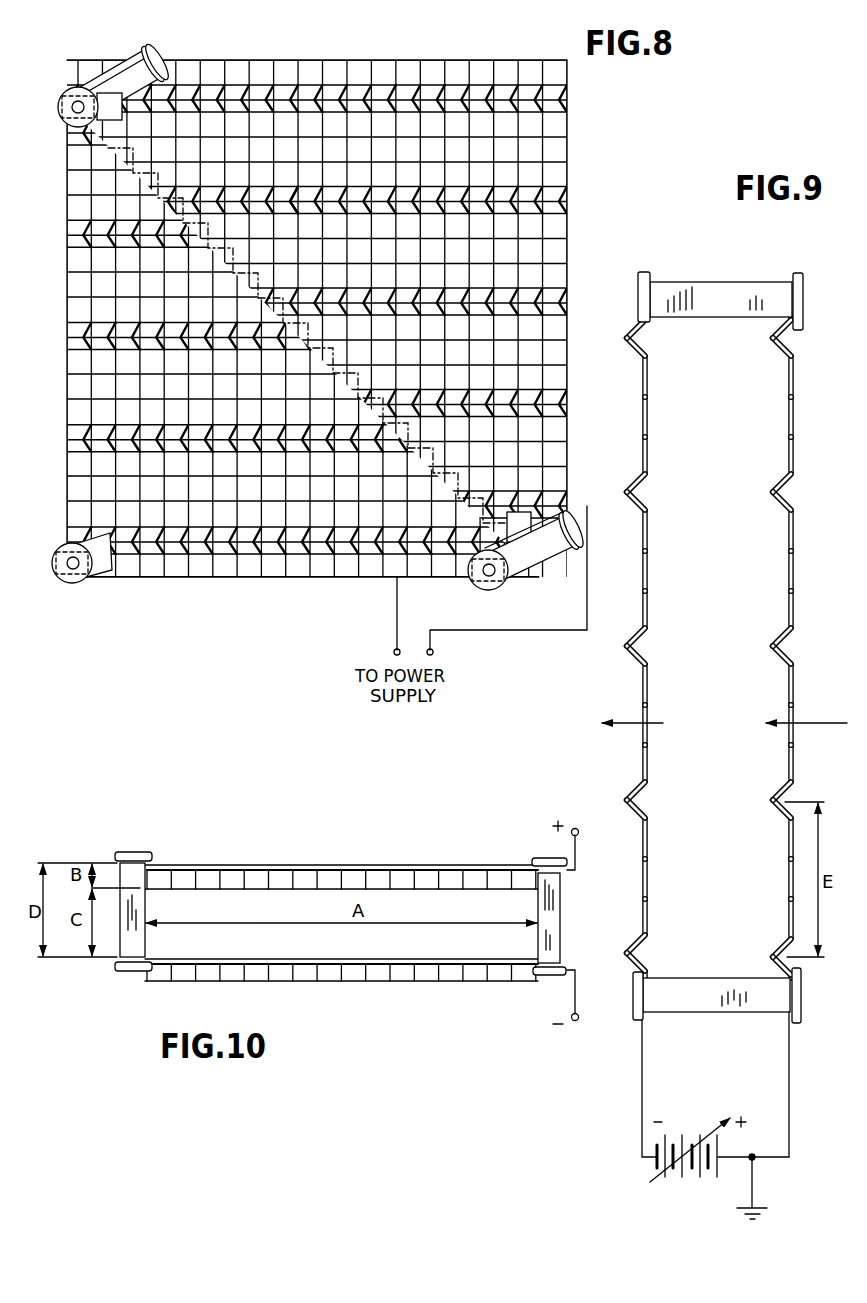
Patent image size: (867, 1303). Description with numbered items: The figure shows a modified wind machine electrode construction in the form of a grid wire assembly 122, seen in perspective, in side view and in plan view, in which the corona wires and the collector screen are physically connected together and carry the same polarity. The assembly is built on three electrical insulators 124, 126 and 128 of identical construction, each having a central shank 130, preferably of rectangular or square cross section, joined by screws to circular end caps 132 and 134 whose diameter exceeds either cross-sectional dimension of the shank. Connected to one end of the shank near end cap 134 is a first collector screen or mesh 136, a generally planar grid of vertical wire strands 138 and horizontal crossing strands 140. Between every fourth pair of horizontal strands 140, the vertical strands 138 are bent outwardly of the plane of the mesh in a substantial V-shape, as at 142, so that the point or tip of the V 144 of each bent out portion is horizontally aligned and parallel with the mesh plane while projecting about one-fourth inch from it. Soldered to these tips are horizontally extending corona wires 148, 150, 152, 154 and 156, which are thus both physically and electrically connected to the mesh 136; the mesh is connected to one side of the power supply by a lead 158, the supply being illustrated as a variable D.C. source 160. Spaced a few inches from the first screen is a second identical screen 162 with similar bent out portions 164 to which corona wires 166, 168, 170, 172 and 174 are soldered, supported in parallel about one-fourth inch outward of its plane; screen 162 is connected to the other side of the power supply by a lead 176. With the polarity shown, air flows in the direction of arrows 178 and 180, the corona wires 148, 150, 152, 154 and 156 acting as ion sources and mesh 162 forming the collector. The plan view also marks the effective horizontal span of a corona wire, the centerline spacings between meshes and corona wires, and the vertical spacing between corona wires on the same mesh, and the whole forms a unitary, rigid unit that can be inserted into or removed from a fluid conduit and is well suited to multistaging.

In FIG. 8, the grid wire assembly 122 is at (586, 237).
In FIG. 9, the grid wire assembly 122 is at (782, 262).
In FIG. 10, the grid wire assembly 122 is at (256, 828).
In FIG. 8, the electrical insulator 124 is at (118, 70).
In FIG. 9, the electrical insulator 124 is at (722, 296).
In FIG. 10, the electrical insulator 124 is at (136, 945).
In FIG. 8, the electrical insulator 126 is at (62, 576).
In FIG. 8, the electrical insulator 128 is at (530, 564).
In FIG. 9, the electrical insulator 128 is at (735, 1012).
In FIG. 10, the electrical insulator 128 is at (498, 978).
In FIG. 8, the central shank 130 is at (94, 80).
In FIG. 8, the circular end cap 132 is at (60, 108).
In FIG. 9, the circular end cap 132 is at (640, 280).
In FIG. 10, the circular end cap 132 is at (118, 972).
In FIG. 8, the circular end cap 134 is at (160, 58).
In FIG. 9, the circular end cap 134 is at (803, 288).
In FIG. 10, the circular end cap 134 is at (134, 852).
In FIG. 8, the first collector screen or mesh 136 is at (566, 150).
In FIG. 9, the first collector screen or mesh 136 is at (794, 552).
In FIG. 10, the first collector screen or mesh 136 is at (334, 866).
In FIG. 8, the vertical wire strands 138 is at (455, 72).
In FIG. 8, the horizontal crossing strands 140 is at (566, 183).
In FIG. 8, the bent out portion 142 is at (506, 96).
In FIG. 10, the bent out portion 142 is at (414, 878).
In FIG. 8, the point or tip of the V 144 is at (314, 208).
In FIG. 8, the corona wire 148 is at (356, 95).
In FIG. 9, the corona wire 148 is at (771, 340).
In FIG. 10, the corona wire 148 is at (460, 892).
In FIG. 8, the corona wire 150 is at (360, 208).
In FIG. 9, the corona wire 150 is at (771, 494).
In FIG. 8, the corona wire 152 is at (546, 312).
In FIG. 9, the corona wire 152 is at (771, 647).
In FIG. 8, the corona wire 154 is at (548, 405).
In FIG. 9, the corona wire 154 is at (771, 802).
In FIG. 8, the corona wire 156 is at (540, 504).
In FIG. 9, the corona wire 156 is at (771, 958).
In FIG. 8, the lead 158 is at (556, 632).
In FIG. 9, the lead 158 is at (790, 1106).
In FIG. 10, the lead 158 is at (566, 846).
In FIG. 9, the variable D.C. source 160 is at (688, 1176).
In FIG. 8, the second screen 162 is at (68, 282).
In FIG. 9, the second screen 162 is at (650, 786).
In FIG. 10, the second screen 162 is at (304, 960).
In FIG. 8, the bent out portion 164 is at (88, 133).
In FIG. 10, the bent out portion 164 is at (424, 972).
In FIG. 8, the corona wire 166 is at (98, 150).
In FIG. 9, the corona wire 166 is at (632, 340).
In FIG. 10, the corona wire 166 is at (306, 984).
In FIG. 8, the corona wire 168 is at (96, 248).
In FIG. 9, the corona wire 168 is at (632, 494).
In FIG. 8, the corona wire 170 is at (94, 352).
In FIG. 9, the corona wire 170 is at (632, 648).
In FIG. 8, the corona wire 172 is at (94, 450).
In FIG. 9, the corona wire 172 is at (632, 801).
In FIG. 8, the corona wire 174 is at (120, 580).
In FIG. 9, the corona wire 174 is at (632, 953).
In FIG. 8, the lead 176 is at (396, 630).
In FIG. 9, the lead 176 is at (641, 1105).
In FIG. 10, the lead 176 is at (566, 994).
In FIG. 9, the arrow 178 is at (624, 723).
In FIG. 9, the arrow 180 is at (810, 723).